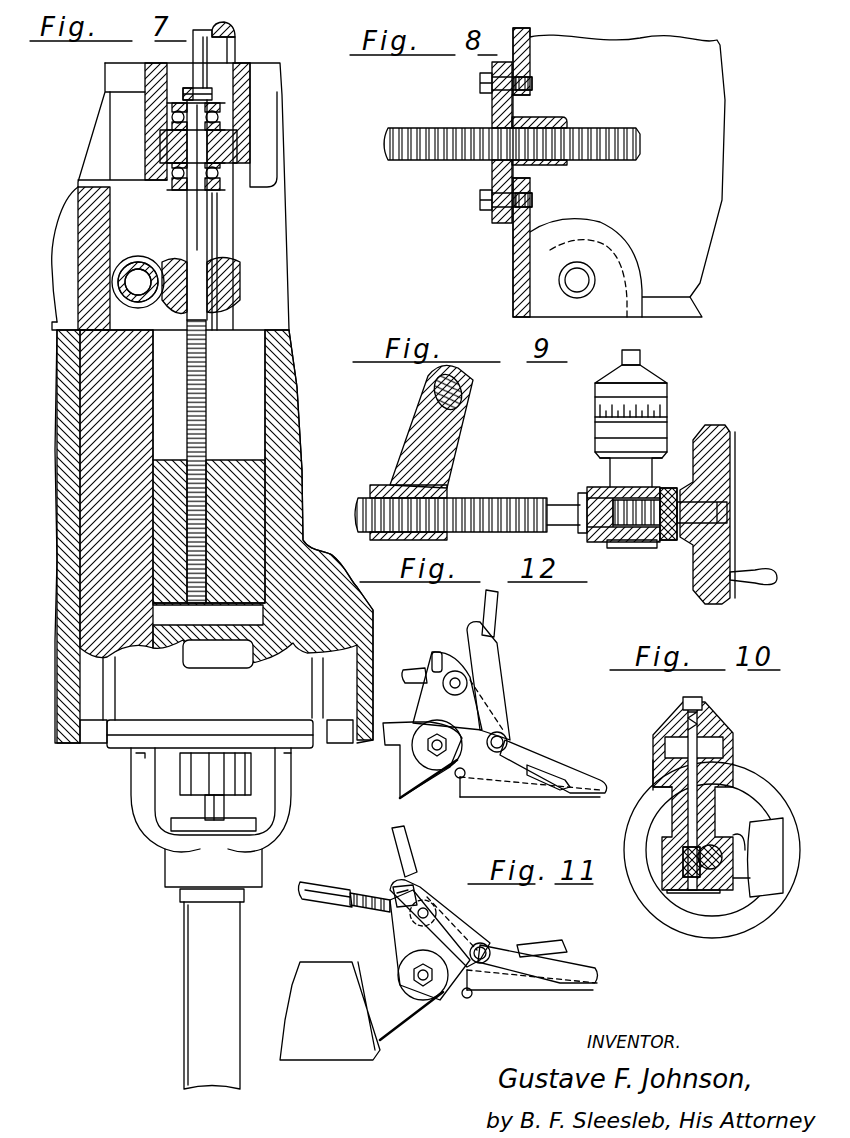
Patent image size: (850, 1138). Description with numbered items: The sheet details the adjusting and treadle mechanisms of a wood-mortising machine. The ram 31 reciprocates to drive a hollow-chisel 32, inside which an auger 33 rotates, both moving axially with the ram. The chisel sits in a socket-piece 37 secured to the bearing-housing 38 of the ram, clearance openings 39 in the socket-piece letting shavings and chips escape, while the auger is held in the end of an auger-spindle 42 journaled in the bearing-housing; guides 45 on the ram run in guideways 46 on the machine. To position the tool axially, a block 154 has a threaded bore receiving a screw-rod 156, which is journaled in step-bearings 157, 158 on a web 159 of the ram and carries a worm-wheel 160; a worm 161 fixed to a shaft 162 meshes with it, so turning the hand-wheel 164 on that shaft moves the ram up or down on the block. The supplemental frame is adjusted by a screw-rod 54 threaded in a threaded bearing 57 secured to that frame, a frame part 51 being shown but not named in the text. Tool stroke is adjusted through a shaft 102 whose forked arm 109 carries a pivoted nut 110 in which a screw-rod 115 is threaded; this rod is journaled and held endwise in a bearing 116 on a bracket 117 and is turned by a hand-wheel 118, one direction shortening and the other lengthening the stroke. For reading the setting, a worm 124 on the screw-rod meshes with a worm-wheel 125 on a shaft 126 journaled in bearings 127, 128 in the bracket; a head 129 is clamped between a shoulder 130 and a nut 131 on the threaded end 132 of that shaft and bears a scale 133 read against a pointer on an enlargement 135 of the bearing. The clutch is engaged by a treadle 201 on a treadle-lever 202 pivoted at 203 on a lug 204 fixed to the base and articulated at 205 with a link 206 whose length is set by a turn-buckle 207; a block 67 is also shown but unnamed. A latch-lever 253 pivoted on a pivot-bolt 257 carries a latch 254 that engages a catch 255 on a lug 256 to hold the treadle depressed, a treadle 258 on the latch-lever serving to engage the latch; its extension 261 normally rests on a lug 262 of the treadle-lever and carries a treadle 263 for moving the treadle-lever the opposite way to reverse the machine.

In FIG. 7, the ram 31 is at (288, 395).
In FIG. 7, the hollow-chisel 32 is at (192, 958).
In FIG. 7, the auger 33 is at (205, 808).
In FIG. 7, the socket-piece 37 is at (168, 870).
In FIG. 7, the bearing-housing 38 is at (310, 740).
In FIG. 7, the clearance openings 39 is at (150, 800).
In FIG. 7, the auger-spindle 42 is at (246, 770).
In FIG. 7, the guides 45 is at (78, 684).
In FIG. 7, the guideways 46 is at (88, 745).
In FIG. 8, the plate 51 is at (513, 260).
In FIG. 8, the screw-rod 54 is at (448, 128).
In FIG. 8, the threaded bearing 57 is at (544, 121).
In FIG. 11, the block 67 is at (330, 968).
In FIG. 9, the shaft 102 is at (465, 392).
In FIG. 9, the arm 109 is at (460, 440).
In FIG. 9, the nut 110 is at (385, 485).
In FIG. 9, the screw-rod 115 is at (475, 498).
In FIG. 9, the bearing 116 is at (600, 490).
In FIG. 10, the bearing 116 is at (738, 848).
In FIG. 10, the bracket 117 is at (738, 882).
In FIG. 9, the hand-wheel 118 is at (730, 432).
In FIG. 10, the hand-wheel 118 is at (755, 928).
In FIG. 9, the worm 124 is at (645, 548).
In FIG. 10, the worm 124 is at (716, 845).
In FIG. 10, the worm-wheel 125 is at (683, 862).
In FIG. 10, the shaft 126 is at (662, 810).
In FIG. 10, the bearing 127 is at (733, 758).
In FIG. 10, the bearing 128 is at (690, 893).
In FIG. 9, the head 129 is at (655, 380).
In FIG. 10, the head 129 is at (720, 722).
In FIG. 10, the shoulder 130 is at (723, 740).
In FIG. 9, the nut 131 is at (640, 357).
In FIG. 10, the nut 131 is at (702, 700).
In FIG. 10, the threaded end 132 is at (686, 715).
In FIG. 9, the scale 133 is at (665, 405).
In FIG. 9, the enlargement 135 is at (668, 432).
In FIG. 10, the enlargement 135 is at (733, 775).
In FIG. 7, the block 154 is at (216, 468).
In FIG. 7, the screw-rod 156 is at (206, 376).
In FIG. 7, the step-bearing 157 is at (214, 120).
In FIG. 7, the step-bearing 158 is at (216, 174).
In FIG. 7, the web 159 is at (236, 110).
In FIG. 7, the worm-wheel 160 is at (238, 285).
In FIG. 7, the worm 161 is at (135, 303).
In FIG. 7, the shaft 162 is at (138, 262).
In FIG. 7, the hand-wheel 164 is at (70, 246).
In FIG. 12, the treadle 201 is at (585, 768).
In FIG. 11, the treadle 201 is at (580, 958).
In FIG. 12, the treadle-lever 202 is at (548, 787).
In FIG. 11, the treadle-lever 202 is at (545, 985).
In FIG. 12, the pivot 203 is at (445, 770).
In FIG. 11, the pivot 203 is at (433, 1010).
In FIG. 12, the lug 204 is at (398, 750).
In FIG. 11, the lug 204 is at (385, 965).
In FIG. 12, the articulation 205 is at (455, 695).
In FIG. 11, the articulation 205 is at (410, 920).
In FIG. 12, the link 206 is at (412, 668).
In FIG. 11, the link 206 is at (395, 895).
In FIG. 11, the turn-buckle 207 is at (332, 887).
In FIG. 12, the latch-lever 253 is at (492, 778).
In FIG. 11, the latch-lever 253 is at (508, 990).
In FIG. 12, the latch 254 is at (462, 790).
In FIG. 11, the latch 254 is at (470, 1000).
In FIG. 12, the catch 255 is at (462, 735).
In FIG. 11, the catch 255 is at (435, 1000).
In FIG. 12, the lug 256 is at (470, 752).
In FIG. 11, the lug 256 is at (448, 962).
In FIG. 12, the pivot-bolt 257 is at (508, 735).
In FIG. 11, the pivot-bolt 257 is at (485, 943).
In FIG. 12, the treadle 258 is at (562, 762).
In FIG. 11, the treadle 258 is at (553, 942).
In FIG. 12, the extension 261 is at (490, 647).
In FIG. 11, the extension 261 is at (425, 882).
In FIG. 12, the lug 262 is at (437, 652).
In FIG. 11, the lug 262 is at (398, 880).
In FIG. 12, the treadle 263 is at (498, 616).
In FIG. 11, the treadle 263 is at (417, 855).